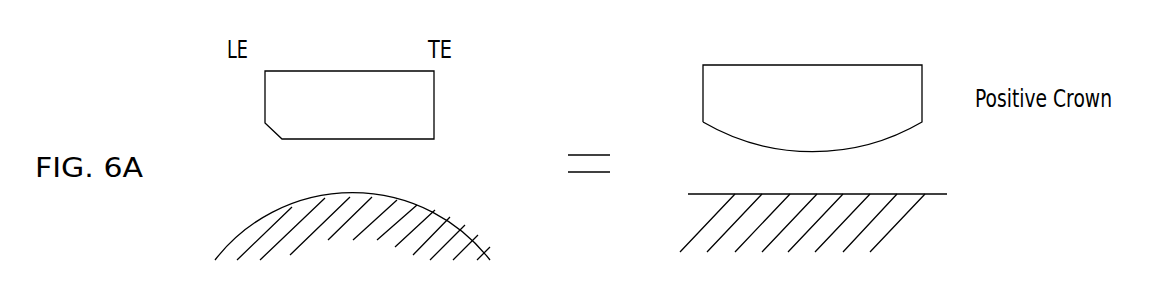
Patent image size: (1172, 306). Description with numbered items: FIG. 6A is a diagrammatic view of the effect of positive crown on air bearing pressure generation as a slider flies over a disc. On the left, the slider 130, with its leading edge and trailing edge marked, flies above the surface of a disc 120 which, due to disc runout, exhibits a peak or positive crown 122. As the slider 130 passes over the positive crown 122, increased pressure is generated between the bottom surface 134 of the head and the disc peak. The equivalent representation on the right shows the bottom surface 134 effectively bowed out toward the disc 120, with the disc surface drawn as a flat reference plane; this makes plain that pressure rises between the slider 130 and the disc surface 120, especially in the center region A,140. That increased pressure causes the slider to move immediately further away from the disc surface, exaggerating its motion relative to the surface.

The slider 130 is at (360, 87).
The bottom surface 134 is at (390, 141).
The positive crown 122 is at (398, 208).
The center region 140 is at (817, 177).
The disc 120 is at (874, 193).